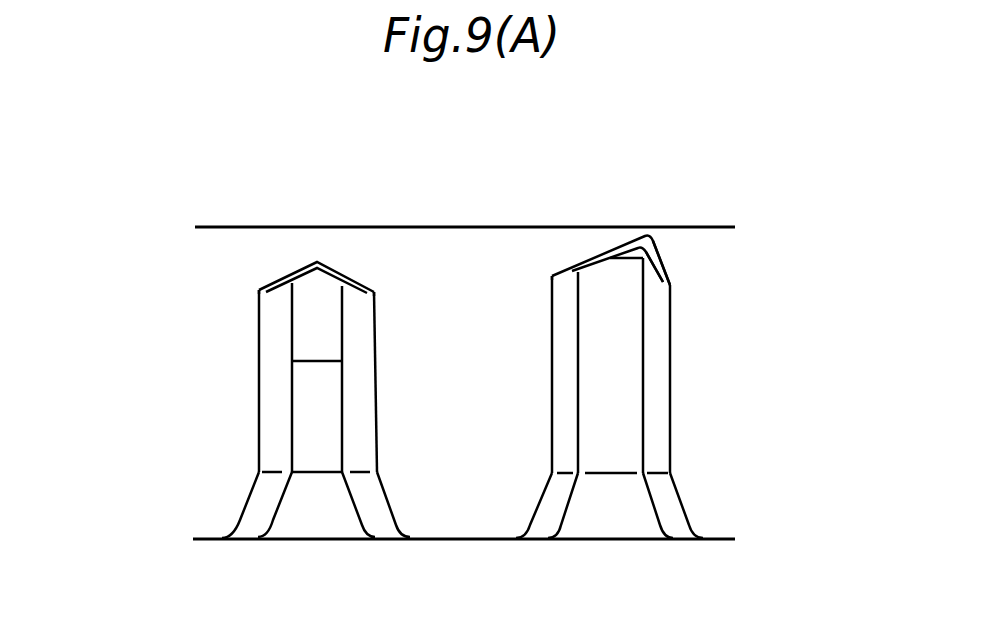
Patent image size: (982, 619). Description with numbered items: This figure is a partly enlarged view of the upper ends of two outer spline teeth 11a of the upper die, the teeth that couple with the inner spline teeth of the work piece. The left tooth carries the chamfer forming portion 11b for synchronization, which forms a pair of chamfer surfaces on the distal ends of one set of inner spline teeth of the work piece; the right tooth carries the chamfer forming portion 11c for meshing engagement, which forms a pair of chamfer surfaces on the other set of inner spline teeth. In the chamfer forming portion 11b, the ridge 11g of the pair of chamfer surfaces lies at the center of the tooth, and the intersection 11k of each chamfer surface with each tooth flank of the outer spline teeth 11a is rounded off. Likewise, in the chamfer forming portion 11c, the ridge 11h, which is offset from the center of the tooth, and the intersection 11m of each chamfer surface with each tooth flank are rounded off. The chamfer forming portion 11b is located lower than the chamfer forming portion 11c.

The outer spline teeth 11a is at (320, 386).
The chamfer forming portion for synchronization 11b is at (315, 282).
The chamfer forming portion for meshing engagement 11c is at (638, 265).
The ridge 11g is at (320, 262).
The ridge 11h is at (649, 238).
The intersection 11k is at (277, 285).
The intersection 11m is at (568, 272).